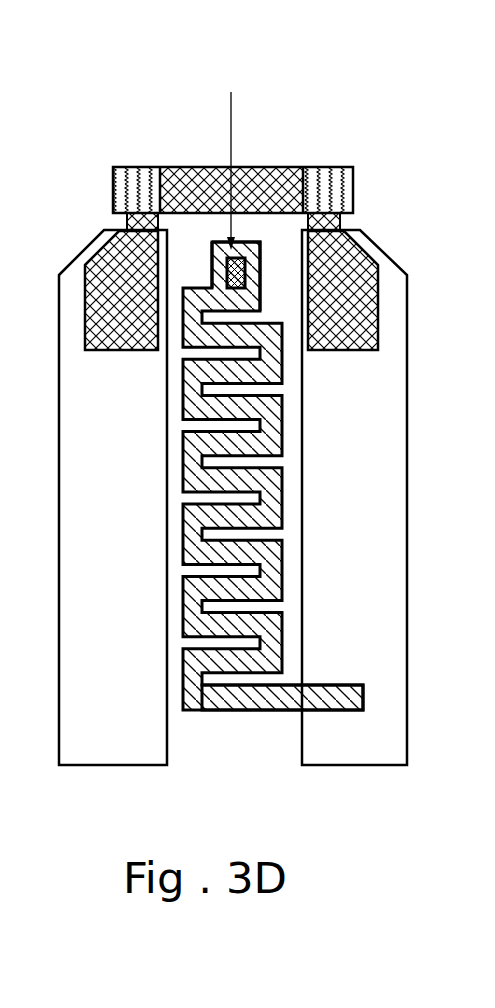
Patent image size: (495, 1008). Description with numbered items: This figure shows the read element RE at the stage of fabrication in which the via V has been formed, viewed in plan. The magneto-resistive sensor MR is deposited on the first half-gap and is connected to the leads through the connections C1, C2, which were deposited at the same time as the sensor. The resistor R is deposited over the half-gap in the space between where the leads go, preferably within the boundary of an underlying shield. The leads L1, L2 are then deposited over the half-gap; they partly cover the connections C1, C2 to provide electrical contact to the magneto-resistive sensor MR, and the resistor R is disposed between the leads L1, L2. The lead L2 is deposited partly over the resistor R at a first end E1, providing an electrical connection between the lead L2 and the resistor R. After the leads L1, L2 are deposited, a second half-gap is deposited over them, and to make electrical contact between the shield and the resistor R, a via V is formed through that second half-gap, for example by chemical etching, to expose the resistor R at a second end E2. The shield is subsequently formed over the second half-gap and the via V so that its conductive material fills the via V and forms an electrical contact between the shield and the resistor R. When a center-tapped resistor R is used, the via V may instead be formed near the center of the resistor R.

The read element RE is at (392, 176).
The magneto-resistive sensor MR is at (275, 167).
The first lead L1 is at (125, 555).
The second lead L2 is at (364, 555).
The first connection C1 is at (102, 270).
The second connection C2 is at (375, 315).
The resistor R is at (212, 711).
The first end E1 is at (320, 685).
The second end E2 is at (261, 284).
The via V is at (226, 270).